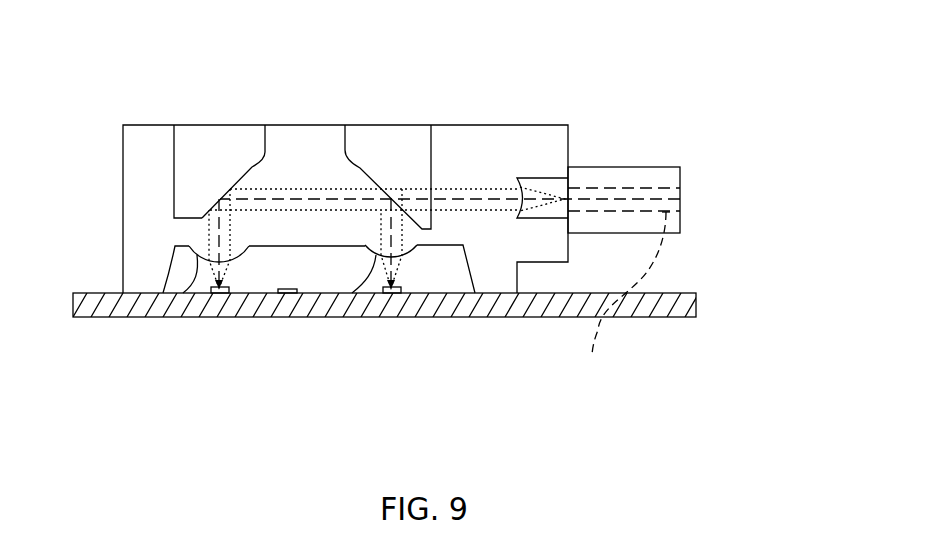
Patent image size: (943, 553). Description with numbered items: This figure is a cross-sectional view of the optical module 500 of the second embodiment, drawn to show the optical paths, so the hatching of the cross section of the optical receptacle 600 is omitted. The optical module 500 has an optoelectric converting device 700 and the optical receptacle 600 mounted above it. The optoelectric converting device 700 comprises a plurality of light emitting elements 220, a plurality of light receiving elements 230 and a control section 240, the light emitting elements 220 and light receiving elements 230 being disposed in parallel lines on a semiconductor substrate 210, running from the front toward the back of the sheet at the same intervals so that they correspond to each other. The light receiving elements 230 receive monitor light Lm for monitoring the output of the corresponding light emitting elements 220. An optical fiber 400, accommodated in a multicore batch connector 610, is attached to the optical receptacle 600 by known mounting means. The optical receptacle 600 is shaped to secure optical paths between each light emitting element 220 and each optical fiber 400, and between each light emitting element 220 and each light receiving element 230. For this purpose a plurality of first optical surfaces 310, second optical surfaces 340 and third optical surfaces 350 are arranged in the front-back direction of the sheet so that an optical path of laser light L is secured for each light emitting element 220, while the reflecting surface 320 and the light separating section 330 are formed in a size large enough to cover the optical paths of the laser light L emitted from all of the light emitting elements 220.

The semiconductor substrate 210 is at (88, 312).
The light emitting element 220 is at (218, 293).
The light receiving element 230 is at (392, 293).
The control section 240 is at (288, 293).
The first optical surface 310 is at (183, 293).
The reflecting surface 320 is at (260, 167).
The light separating section 330 is at (356, 170).
The second optical surface 340 is at (352, 293).
The third optical surface 350 is at (517, 187).
The optical fiber 400 is at (621, 303).
The optical module 500 is at (707, 71).
The optical receptacle 600 is at (577, 112).
The multicore batch connector 610 is at (653, 173).
The optoelectric converting device 700 is at (722, 332).
The laser light L is at (205, 240).
The monitor light Lm is at (396, 224).